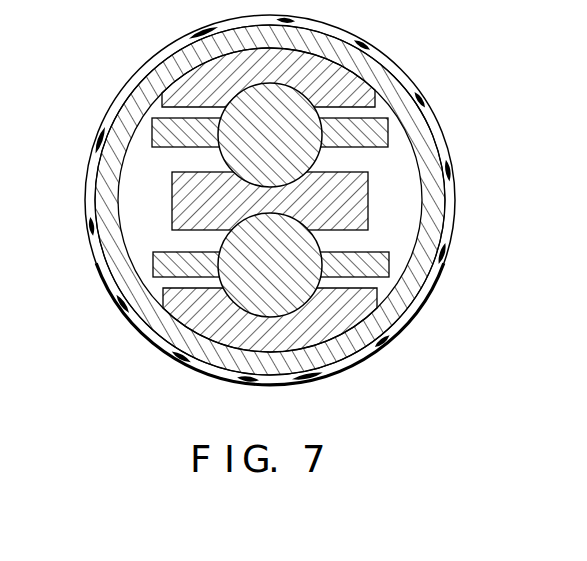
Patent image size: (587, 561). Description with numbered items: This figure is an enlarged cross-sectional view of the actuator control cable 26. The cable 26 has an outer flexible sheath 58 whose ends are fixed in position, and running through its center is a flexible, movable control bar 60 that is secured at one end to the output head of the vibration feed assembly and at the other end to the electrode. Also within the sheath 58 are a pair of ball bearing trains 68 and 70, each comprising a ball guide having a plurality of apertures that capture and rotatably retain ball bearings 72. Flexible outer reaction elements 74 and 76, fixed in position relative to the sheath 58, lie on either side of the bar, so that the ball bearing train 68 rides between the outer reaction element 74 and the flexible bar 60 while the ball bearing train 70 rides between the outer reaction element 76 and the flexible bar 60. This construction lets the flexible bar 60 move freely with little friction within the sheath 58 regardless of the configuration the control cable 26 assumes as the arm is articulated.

The cable 26 is at (390, 33).
The flexible sheath 58 is at (420, 140).
The central movable control bar 60 is at (355, 199).
The ball bearing train 68 is at (163, 136).
The ball bearing train 70 is at (382, 262).
The ball bearings 72 is at (296, 90).
The outer reaction element 74 is at (175, 92).
The outer reaction element 76 is at (208, 333).